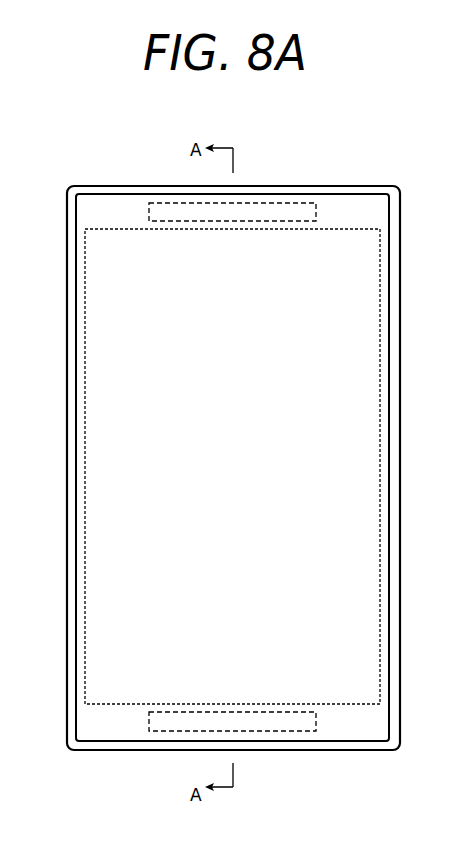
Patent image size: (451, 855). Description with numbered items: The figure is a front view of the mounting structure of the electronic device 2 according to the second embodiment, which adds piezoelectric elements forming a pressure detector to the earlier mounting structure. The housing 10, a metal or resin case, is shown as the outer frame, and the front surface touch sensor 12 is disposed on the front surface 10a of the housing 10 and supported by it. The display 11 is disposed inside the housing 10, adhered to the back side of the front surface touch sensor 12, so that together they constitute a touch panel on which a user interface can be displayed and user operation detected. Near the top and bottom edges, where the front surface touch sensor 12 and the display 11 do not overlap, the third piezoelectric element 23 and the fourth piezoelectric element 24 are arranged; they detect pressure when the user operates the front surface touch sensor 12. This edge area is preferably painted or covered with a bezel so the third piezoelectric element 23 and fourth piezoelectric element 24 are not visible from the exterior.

The electronic device 2 is at (109, 757).
The housing 10 is at (402, 550).
The front surface 10a is at (297, 186).
The display 11 is at (109, 470).
The front surface touch sensor 12 is at (77, 413).
The third piezoelectric element 23 is at (185, 203).
The fourth piezoelectric element 24 is at (268, 731).